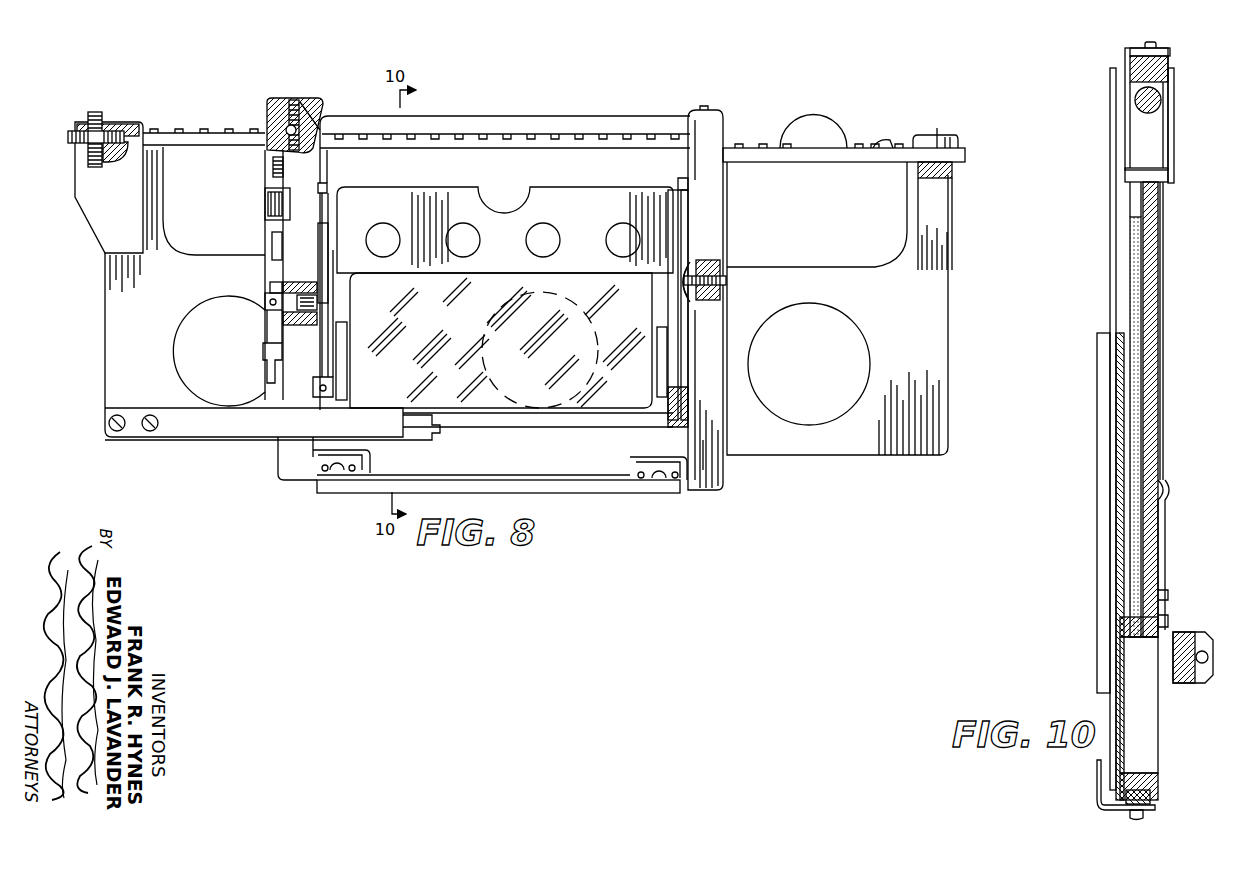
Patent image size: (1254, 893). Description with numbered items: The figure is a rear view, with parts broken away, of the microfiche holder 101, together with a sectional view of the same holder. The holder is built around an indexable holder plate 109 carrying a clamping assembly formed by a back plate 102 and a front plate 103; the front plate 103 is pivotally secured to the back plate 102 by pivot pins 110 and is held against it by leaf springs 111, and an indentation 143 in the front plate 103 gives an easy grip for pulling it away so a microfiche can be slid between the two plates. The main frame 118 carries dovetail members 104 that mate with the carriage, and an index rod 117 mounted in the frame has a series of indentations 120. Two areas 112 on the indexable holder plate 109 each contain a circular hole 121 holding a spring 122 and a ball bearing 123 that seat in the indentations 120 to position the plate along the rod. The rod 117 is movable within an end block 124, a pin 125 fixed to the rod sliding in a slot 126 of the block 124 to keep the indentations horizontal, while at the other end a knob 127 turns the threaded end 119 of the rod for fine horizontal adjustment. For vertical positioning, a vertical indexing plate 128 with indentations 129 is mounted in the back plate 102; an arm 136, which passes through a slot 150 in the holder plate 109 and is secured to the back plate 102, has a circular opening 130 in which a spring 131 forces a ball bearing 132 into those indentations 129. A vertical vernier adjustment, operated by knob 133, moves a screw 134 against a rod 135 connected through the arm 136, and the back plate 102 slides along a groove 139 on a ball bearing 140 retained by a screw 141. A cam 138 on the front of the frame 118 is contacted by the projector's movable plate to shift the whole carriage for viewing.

In FIG. 8, the microfiche holder 101 is at (598, 163).
In FIG. 8, the back plate 102 is at (675, 376).
In FIG. 10, the back plate 102 is at (1138, 400).
In FIG. 8, the front plate 103 is at (683, 214).
In FIG. 10, the front plate 103 is at (1152, 380).
In FIG. 10, the dovetail members 104 is at (1098, 430).
In FIG. 8, the indexable holder plate 109 is at (712, 147).
In FIG. 10, the indexable holder plate 109 is at (1160, 150).
In FIG. 8, the pivot pins 110 is at (672, 427).
In FIG. 8, the leaf springs 111 is at (340, 371).
In FIG. 10, the leaf springs 111 is at (1165, 540).
In FIG. 8, the areas 112 is at (300, 102).
In FIG. 10, the areas 112 is at (1133, 50).
In FIG. 8, the index rod 117 is at (887, 144).
In FIG. 10, the index rod 117 is at (1162, 100).
In FIG. 8, the main frame 118 is at (922, 370).
In FIG. 8, the threaded end 119 is at (70, 139).
In FIG. 8, the indentations 120 is at (790, 137).
In FIG. 8, the circular hole 121 is at (269, 108).
In FIG. 8, the spring 122 is at (320, 116).
In FIG. 8, the ball bearing 123 is at (285, 131).
In FIG. 8, the end block 124 is at (955, 152).
In FIG. 8, the pin 125 is at (937, 128).
In FIG. 8, the slot 126 is at (948, 137).
In FIG. 8, the knob 127 is at (96, 112).
In FIG. 8, the vertical indexing plate 128 is at (328, 237).
In FIG. 8, the indentations 129 is at (331, 271).
In FIG. 8, the circular opening 130 is at (308, 285).
In FIG. 8, the spring 131 is at (268, 332).
In FIG. 8, the ball bearing 132 is at (320, 299).
In FIG. 8, the knob 133 is at (265, 204).
In FIG. 8, the screw 134 is at (271, 168).
In FIG. 8, the rod 135 is at (271, 246).
In FIG. 8, the arm 136 is at (265, 306).
In FIG. 8, the cam 138 is at (422, 440).
In FIG. 10, the cam 138 is at (1180, 683).
In FIG. 8, the groove 139 is at (700, 263).
In FIG. 8, the ball bearing 140 is at (694, 290).
In FIG. 8, the screw 141 is at (727, 283).
In FIG. 8, the indentation 143 is at (531, 205).
In FIG. 8, the slot 150 is at (268, 289).